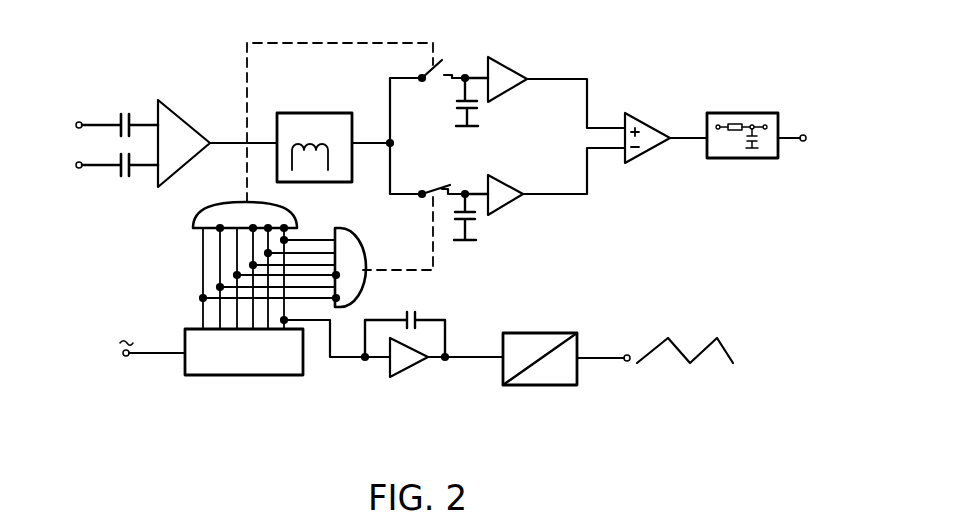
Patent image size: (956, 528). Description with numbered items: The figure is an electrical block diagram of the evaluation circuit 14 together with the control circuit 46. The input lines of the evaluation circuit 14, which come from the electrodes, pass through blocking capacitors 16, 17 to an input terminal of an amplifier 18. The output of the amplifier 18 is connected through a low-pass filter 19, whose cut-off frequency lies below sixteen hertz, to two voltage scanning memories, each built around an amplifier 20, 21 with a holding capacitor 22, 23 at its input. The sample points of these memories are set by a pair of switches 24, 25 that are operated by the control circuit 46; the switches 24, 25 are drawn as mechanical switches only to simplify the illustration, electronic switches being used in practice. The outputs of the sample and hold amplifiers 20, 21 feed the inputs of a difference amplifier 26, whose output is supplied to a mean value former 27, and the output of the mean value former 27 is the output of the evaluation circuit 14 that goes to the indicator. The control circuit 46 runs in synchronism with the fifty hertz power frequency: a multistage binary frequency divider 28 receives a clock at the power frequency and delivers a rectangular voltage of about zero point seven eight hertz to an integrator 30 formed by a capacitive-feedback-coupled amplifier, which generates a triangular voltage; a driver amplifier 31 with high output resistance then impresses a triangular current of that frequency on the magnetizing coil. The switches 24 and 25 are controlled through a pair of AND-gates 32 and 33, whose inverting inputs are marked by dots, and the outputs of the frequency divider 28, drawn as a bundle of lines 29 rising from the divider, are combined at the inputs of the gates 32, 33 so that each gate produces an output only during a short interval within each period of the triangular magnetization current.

The evaluation circuit 14 is at (532, 57).
The blocking capacitor 16 is at (123, 113).
The blocking capacitor 17 is at (124, 178).
The amplifier 18 is at (181, 125).
The low-pass filter 19 is at (305, 122).
The amplifier 20 is at (499, 70).
The amplifier 21 is at (506, 198).
The holding capacitor 22 is at (463, 90).
The holding capacitor 23 is at (476, 224).
The switch 24 is at (428, 62).
The switch 25 is at (432, 187).
The difference amplifier 26 is at (640, 120).
The mean value former 27 is at (733, 113).
The multistage frequency divider 28 is at (242, 368).
The control lines 29 is at (204, 319).
The integrator 30 is at (405, 362).
The driver amplifier 31 is at (542, 380).
The AND-gate 32 is at (282, 215).
The AND-gate 33 is at (356, 280).
The control circuit 46 is at (327, 374).